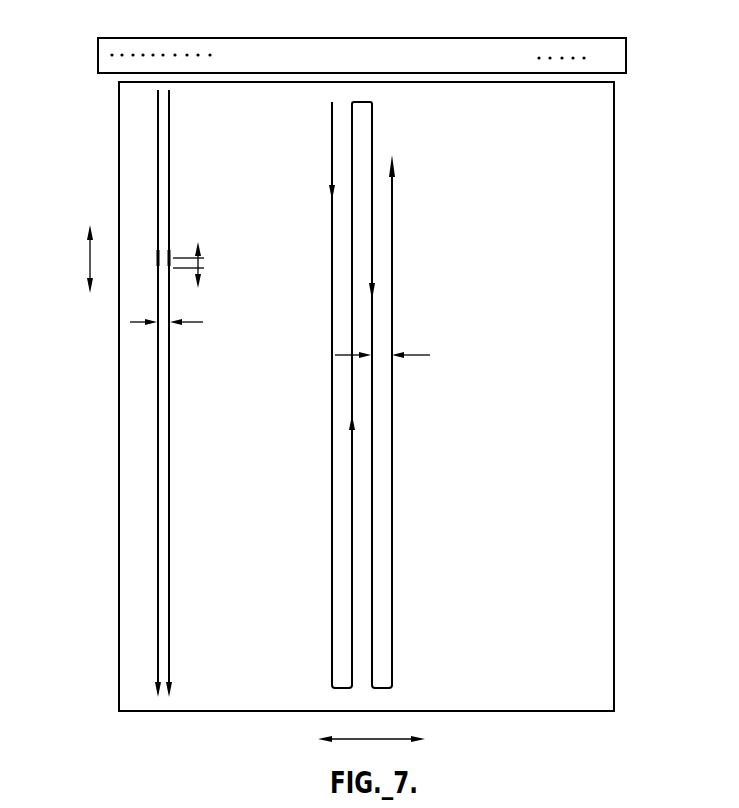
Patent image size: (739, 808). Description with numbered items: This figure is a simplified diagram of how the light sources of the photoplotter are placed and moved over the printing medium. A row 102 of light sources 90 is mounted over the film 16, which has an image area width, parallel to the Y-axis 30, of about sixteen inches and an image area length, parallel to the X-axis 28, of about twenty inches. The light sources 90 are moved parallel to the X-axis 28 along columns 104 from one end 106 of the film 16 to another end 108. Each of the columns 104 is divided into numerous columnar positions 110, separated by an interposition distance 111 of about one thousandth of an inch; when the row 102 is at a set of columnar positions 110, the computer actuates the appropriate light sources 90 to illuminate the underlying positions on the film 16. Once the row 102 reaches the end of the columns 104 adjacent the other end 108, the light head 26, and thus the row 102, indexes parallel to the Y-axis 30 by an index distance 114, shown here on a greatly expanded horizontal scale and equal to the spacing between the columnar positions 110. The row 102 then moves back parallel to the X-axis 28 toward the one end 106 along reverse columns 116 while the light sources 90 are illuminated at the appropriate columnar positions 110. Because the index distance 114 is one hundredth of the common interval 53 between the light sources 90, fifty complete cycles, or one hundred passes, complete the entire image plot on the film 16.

The film 16 is at (600, 612).
The light head 26 is at (622, 33).
The X-axis 28 is at (90, 258).
The Y-axis 30 is at (372, 739).
The common interval 53 is at (163, 326).
The light sources 90 is at (133, 55).
The row 102 is at (88, 48).
The columns 104 is at (160, 422).
The one end 106 is at (408, 83).
The another end 108 is at (518, 712).
The columnar positions 110 is at (158, 258).
The interposition distance 111 is at (204, 264).
The index distance 114 is at (380, 357).
The reverse columns 116 is at (353, 520).